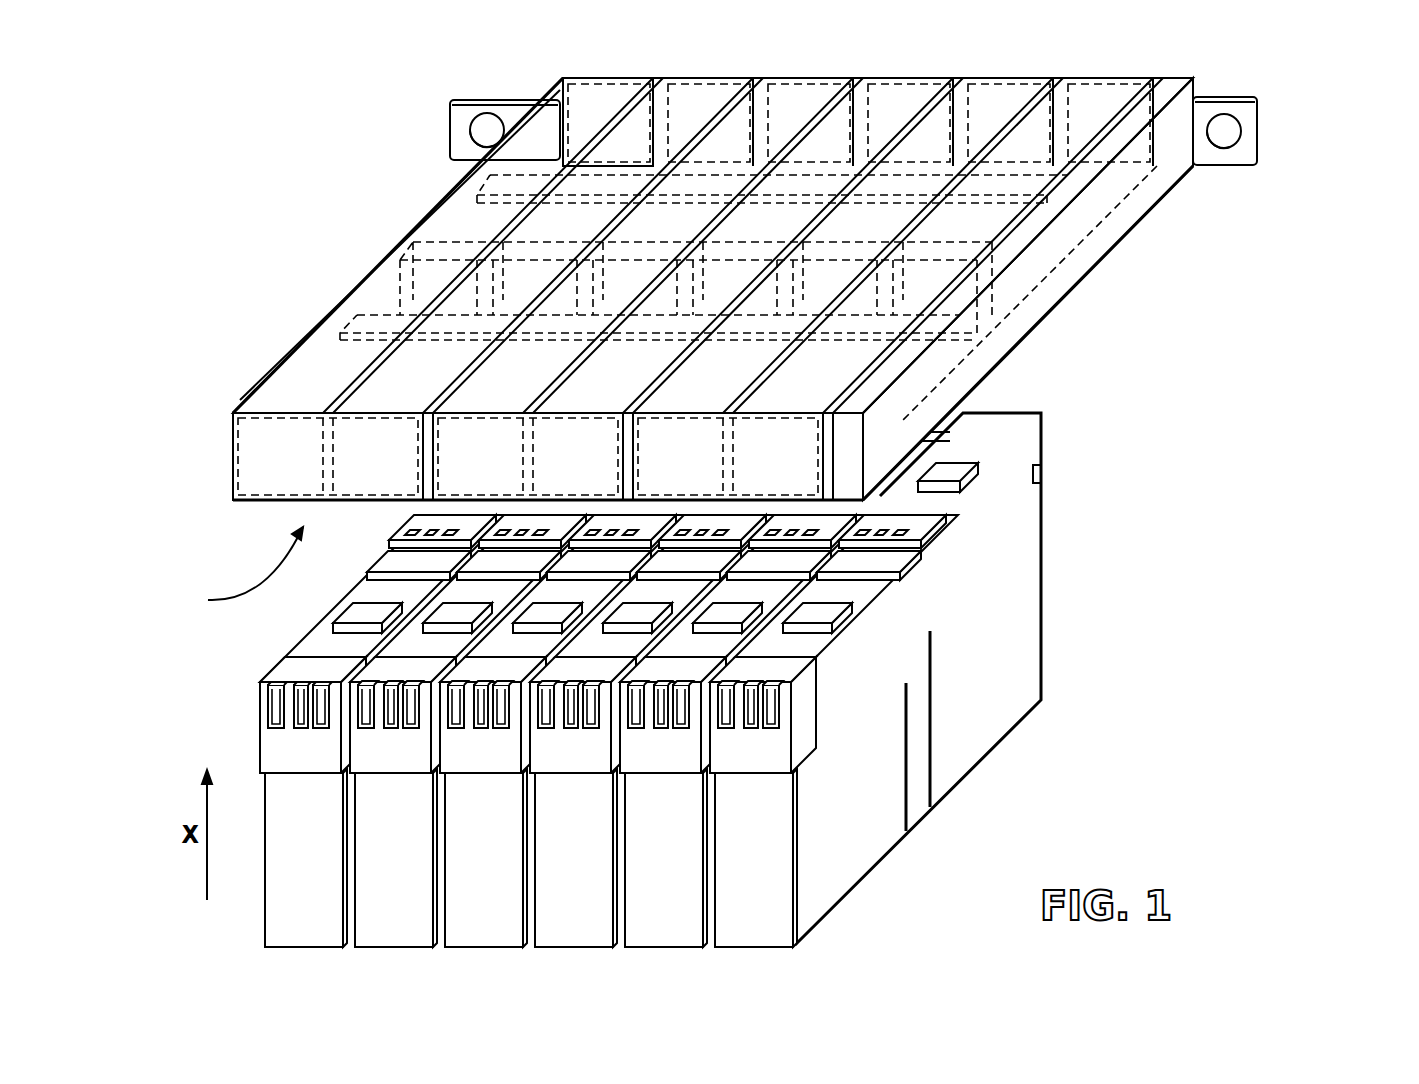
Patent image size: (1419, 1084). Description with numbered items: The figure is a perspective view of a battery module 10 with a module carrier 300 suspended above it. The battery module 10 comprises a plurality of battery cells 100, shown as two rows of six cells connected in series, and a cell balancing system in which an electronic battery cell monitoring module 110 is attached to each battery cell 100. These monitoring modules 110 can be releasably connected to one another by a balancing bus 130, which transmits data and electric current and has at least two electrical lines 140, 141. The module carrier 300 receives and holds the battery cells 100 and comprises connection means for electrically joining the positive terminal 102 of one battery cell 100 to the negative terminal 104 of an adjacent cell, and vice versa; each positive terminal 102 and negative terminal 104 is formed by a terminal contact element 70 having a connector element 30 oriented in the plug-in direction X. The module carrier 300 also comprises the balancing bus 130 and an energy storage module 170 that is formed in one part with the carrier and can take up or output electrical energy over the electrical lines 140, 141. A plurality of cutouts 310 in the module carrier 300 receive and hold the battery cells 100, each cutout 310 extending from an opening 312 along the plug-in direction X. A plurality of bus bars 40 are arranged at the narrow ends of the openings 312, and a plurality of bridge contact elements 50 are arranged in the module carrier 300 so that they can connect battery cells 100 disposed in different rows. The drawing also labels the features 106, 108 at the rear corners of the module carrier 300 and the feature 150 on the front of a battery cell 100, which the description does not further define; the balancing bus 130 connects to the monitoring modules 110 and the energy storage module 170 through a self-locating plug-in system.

The battery module 10 is at (1212, 660).
The connector element 30 is at (272, 742).
The bus bar 40 is at (233, 440).
The bridge contact element 50 is at (1005, 272).
The terminal contact element 70 is at (262, 680).
The battery cell 100 is at (828, 803).
The positive terminal 102 is at (810, 660).
The negative terminal 104 is at (890, 562).
The mounting bracket 106 is at (1258, 135).
The mounting bracket 108 is at (470, 100).
The electronic battery cell monitoring module 110 is at (840, 620).
The balancing bus 130 is at (443, 310).
The electrical line 140 is at (478, 190).
The electrical line 141 is at (342, 333).
The battery module 150 is at (283, 906).
The energy storage module 170 is at (1018, 332).
The module carrier 300 is at (752, 269).
The cutout 310 is at (297, 385).
The opening 312 is at (231, 570).